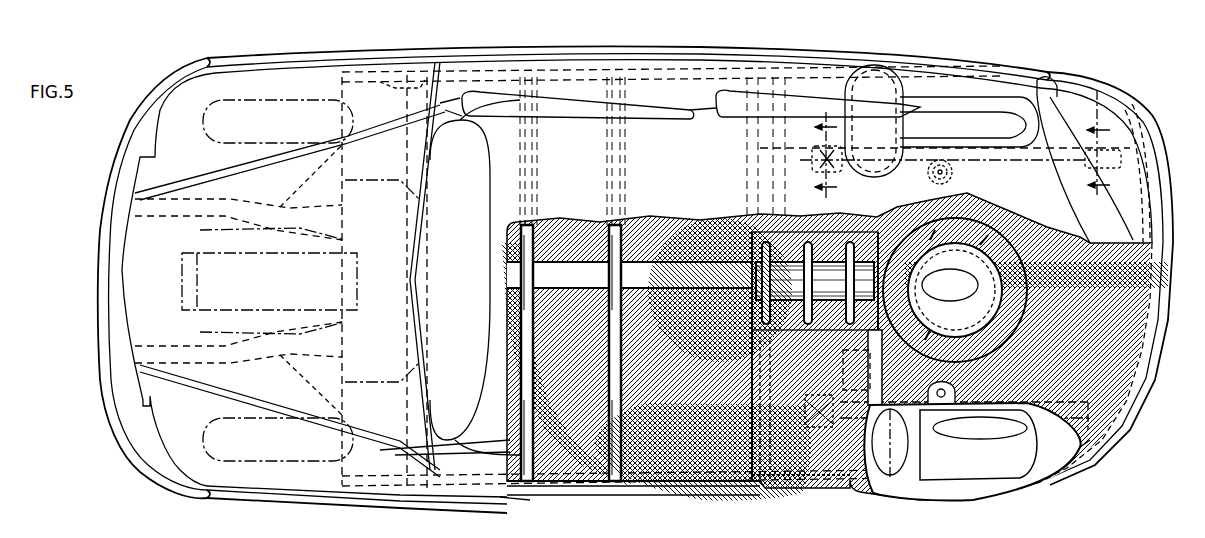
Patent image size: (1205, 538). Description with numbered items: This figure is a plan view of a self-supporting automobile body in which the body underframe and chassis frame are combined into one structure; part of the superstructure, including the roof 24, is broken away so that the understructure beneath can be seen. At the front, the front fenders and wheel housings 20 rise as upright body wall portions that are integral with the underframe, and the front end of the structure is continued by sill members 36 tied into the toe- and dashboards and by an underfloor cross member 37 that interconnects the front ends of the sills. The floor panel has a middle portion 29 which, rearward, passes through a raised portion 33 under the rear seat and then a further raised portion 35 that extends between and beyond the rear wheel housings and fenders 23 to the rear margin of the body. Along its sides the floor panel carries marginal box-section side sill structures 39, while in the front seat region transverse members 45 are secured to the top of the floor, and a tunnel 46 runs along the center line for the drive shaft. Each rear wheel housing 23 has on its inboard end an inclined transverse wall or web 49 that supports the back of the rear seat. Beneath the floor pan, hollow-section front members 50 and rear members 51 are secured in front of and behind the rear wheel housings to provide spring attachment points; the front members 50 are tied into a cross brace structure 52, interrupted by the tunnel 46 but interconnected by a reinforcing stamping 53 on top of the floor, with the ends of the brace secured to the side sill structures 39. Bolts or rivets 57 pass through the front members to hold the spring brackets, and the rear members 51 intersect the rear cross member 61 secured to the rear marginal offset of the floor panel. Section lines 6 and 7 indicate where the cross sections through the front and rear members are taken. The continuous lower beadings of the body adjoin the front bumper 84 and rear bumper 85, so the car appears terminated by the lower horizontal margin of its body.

The front fenders and wheel housings 20 is at (246, 73).
The rear wheel housings and fenders 23 is at (966, 500).
The roof 24 is at (690, 182).
The middle portion of floor panel 29 is at (663, 485).
The raised portion under the rear seat 33 is at (817, 478).
The further raised portion 35 is at (1120, 288).
The sill members 36 is at (175, 218).
The underfloor cross member 37 is at (395, 100).
The side sill structures 39 is at (638, 497).
The transverse members 45 is at (617, 481).
The tunnel 46 is at (660, 272).
The inclined transverse wall or web 49 is at (910, 470).
The front trough- or hollow-section members 50 is at (815, 403).
The rear trough- or hollow-section members 51 is at (1082, 470).
The cross brace structure 52 is at (775, 481).
The reinforcing stamping 53 is at (837, 345).
The bolts or rivets 57 is at (540, 530).
The rear cross member 61 is at (1142, 378).
The front bumper 84 is at (108, 385).
The rear bumper 85 is at (1163, 200).
The section line 6- 6 is at (874, 156).
The section line 7- 7 is at (1095, 153).